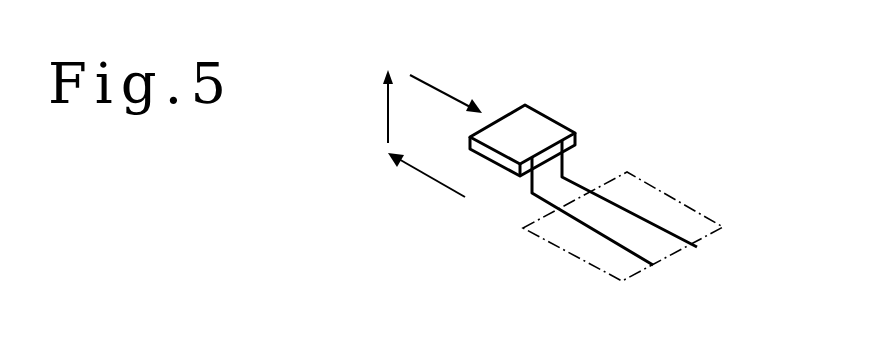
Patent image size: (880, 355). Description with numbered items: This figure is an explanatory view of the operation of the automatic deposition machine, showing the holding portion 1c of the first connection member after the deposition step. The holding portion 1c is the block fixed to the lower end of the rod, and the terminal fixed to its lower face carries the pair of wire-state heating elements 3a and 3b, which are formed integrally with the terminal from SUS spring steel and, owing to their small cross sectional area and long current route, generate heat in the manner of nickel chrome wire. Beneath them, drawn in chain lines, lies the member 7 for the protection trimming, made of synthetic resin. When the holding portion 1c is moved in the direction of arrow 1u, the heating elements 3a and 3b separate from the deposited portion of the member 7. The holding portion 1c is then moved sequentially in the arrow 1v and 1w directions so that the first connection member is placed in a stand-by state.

The holding portion 1c is at (545, 132).
The arrow direction 1u is at (430, 178).
The arrow direction 1v is at (387, 118).
The arrow direction 1w is at (440, 88).
The heating element 3a is at (598, 232).
The heating element 3b is at (653, 228).
The member for the protection trimming 7 is at (675, 198).